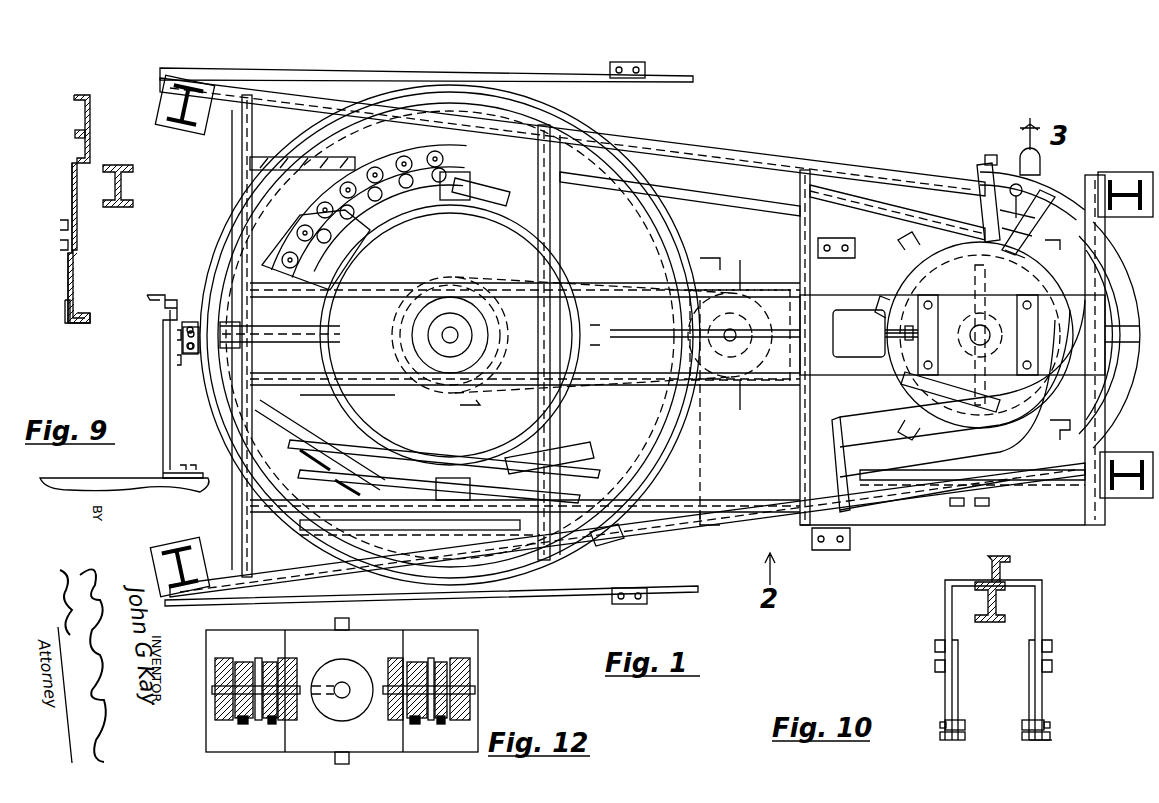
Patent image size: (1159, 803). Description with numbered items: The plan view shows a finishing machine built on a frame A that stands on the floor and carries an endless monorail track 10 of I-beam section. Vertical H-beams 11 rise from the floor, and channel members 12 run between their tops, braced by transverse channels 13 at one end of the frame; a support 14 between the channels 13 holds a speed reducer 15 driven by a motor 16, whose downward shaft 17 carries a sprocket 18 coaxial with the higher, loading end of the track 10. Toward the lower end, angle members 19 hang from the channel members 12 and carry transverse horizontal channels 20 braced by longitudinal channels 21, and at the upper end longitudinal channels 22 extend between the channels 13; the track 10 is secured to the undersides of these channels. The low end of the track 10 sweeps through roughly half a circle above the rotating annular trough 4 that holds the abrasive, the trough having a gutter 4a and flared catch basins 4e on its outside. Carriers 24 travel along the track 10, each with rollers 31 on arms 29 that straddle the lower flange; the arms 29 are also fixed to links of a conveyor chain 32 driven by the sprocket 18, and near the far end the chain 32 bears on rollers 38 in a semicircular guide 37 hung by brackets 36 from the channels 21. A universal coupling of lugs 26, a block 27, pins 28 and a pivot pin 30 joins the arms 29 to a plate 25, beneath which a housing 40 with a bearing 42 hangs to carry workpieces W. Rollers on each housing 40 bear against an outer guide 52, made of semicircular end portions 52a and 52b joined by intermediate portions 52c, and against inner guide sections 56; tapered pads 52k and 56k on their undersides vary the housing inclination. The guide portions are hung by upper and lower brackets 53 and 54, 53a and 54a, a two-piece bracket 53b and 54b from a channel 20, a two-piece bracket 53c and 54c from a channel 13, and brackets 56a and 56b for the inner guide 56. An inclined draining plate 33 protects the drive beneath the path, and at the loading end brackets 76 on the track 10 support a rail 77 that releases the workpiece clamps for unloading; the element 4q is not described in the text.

In FIG. 1, the annular trough 4 is at (672, 258).
In FIG. 1, the gutter 4a is at (682, 245).
In FIG. 1, the catch basin 4e is at (470, 78).
In FIG. 1, the rail plate 4q is at (565, 76).
In FIG. 1, the frame A is at (762, 146).
In FIG. 1, the monorail track 10 is at (742, 198).
In FIG. 9, the monorail track 10 is at (124, 204).
In FIG. 10, the monorail track 10 is at (992, 622).
In FIG. 1, the vertical H-beams 11 is at (185, 120).
In FIG. 1, the channel members 12 is at (710, 140).
In FIG. 9, the channel members 12 is at (92, 102).
In FIG. 1, the transverse channels 13 is at (800, 232).
In FIG. 1, the support 14 is at (842, 296).
In FIG. 1, the speed reducer 15 is at (956, 296).
In FIG. 1, the motor 16 is at (872, 300).
In FIG. 1, the shaft 17 is at (973, 335).
In FIG. 1, the sprocket 18 is at (915, 238).
In FIG. 1, the angle members 19 is at (240, 98).
In FIG. 1, the transverse horizontal channels 20 is at (552, 425).
In FIG. 1, the longitudinal channels 21 is at (275, 157).
In FIG. 10, the longitudinal channels 21 is at (1004, 560).
In FIG. 1, the longitudinal channels 22 is at (850, 190).
In FIG. 9, the longitudinal channels 22 is at (92, 136).
In FIG. 1, the carriers 24 is at (405, 156).
In FIG. 12, the carriers 24 is at (206, 740).
In FIG. 1, the plate 25 is at (310, 212).
In FIG. 12, the plate 25 is at (374, 628).
In FIG. 12, the lugs 26 is at (228, 652).
In FIG. 12, the block 27 is at (242, 724).
In FIG. 12, the pins 28 is at (212, 690).
In FIG. 12, the arms 29 is at (244, 660).
In FIG. 12, the pivot pin 30 is at (260, 658).
In FIG. 1, the rollers 31 is at (985, 210).
In FIG. 1, the conveyor chain 32 is at (305, 240).
In FIG. 1, the draining plate 33 is at (748, 524).
In FIG. 1, the brackets 36 is at (470, 190).
In FIG. 1, the semicircular guide 37 is at (395, 448).
In FIG. 1, the rollers 38 is at (388, 220).
In FIG. 1, the housing 40 is at (282, 630).
In FIG. 12, the housing 40 is at (282, 630).
In FIG. 1, the bearing 42 is at (215, 362).
In FIG. 9, the bearing 42 is at (212, 368).
In FIG. 1, the outer guide 52 is at (290, 450).
In FIG. 1, the semicircular end portion of outer guide 52a is at (322, 478).
In FIG. 1, the semicircular end portion of outer guide 52b is at (1122, 262).
In FIG. 9, the semicircular end portion of outer guide 52b is at (88, 300).
In FIG. 1, the intermediate guide portion 52c is at (610, 540).
In FIG. 10, the intermediate guide portion 52c is at (962, 720).
In FIG. 10, the tapered pad 52k is at (958, 730).
In FIG. 1, the upper bracket 53 is at (465, 522).
In FIG. 10, the upper bracket 53 is at (945, 606).
In FIG. 1, the upper bracket 53a is at (956, 506).
In FIG. 9, the upper bracket 53a is at (70, 190).
In FIG. 1, the upper bracket piece 53b is at (300, 326).
In FIG. 1, the upper bracket piece 53c is at (1130, 326).
In FIG. 10, the lower bracket 54 is at (945, 692).
In FIG. 1, the lower bracket 54a is at (984, 500).
In FIG. 9, the lower bracket 54a is at (68, 282).
In FIG. 1, the lower bracket piece 54b is at (300, 344).
In FIG. 1, the lower bracket piece 54c is at (1130, 344).
In FIG. 1, the inner guide 56 is at (586, 450).
In FIG. 9, the inner guide 56 is at (147, 296).
In FIG. 10, the inner guide 56 is at (1032, 720).
In FIG. 1, the upper bracket 56a is at (505, 212).
In FIG. 9, the upper bracket 56a is at (168, 350).
In FIG. 10, the upper bracket 56a is at (1044, 612).
In FIG. 1, the lower bracket 56b is at (490, 226).
In FIG. 9, the lower bracket 56b is at (172, 456).
In FIG. 10, the lower bracket 56b is at (1044, 690).
In FIG. 10, the tapered pad 56k is at (1035, 738).
In FIG. 1, the brackets 76 is at (990, 168).
In FIG. 1, the rail 77 is at (1030, 186).
In FIG. 1, the workpieces W is at (1039, 160).